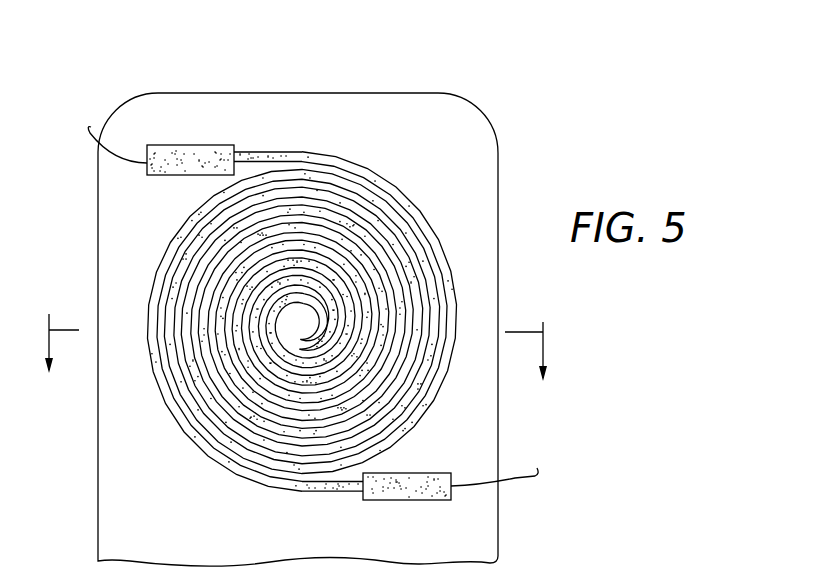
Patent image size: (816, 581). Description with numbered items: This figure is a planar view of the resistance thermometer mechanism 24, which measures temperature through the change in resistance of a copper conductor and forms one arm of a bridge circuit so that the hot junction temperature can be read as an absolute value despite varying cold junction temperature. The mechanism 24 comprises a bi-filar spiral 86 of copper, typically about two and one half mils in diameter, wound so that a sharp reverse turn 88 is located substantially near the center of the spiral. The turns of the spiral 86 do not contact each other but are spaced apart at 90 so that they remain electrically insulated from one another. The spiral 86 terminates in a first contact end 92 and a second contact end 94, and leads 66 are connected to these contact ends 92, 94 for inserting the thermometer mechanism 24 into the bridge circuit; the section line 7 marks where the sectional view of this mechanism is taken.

The resistance thermometer mechanism 24 is at (548, 147).
The leads 66 is at (100, 142).
The bi-filar spiral 86 is at (317, 308).
The sharp reverse turn 88 is at (306, 318).
The spacing between turns 90 is at (317, 321).
The first contact end 92 is at (190, 154).
The second contact end 94 is at (411, 481).
The section line 7- 7 is at (298, 330).